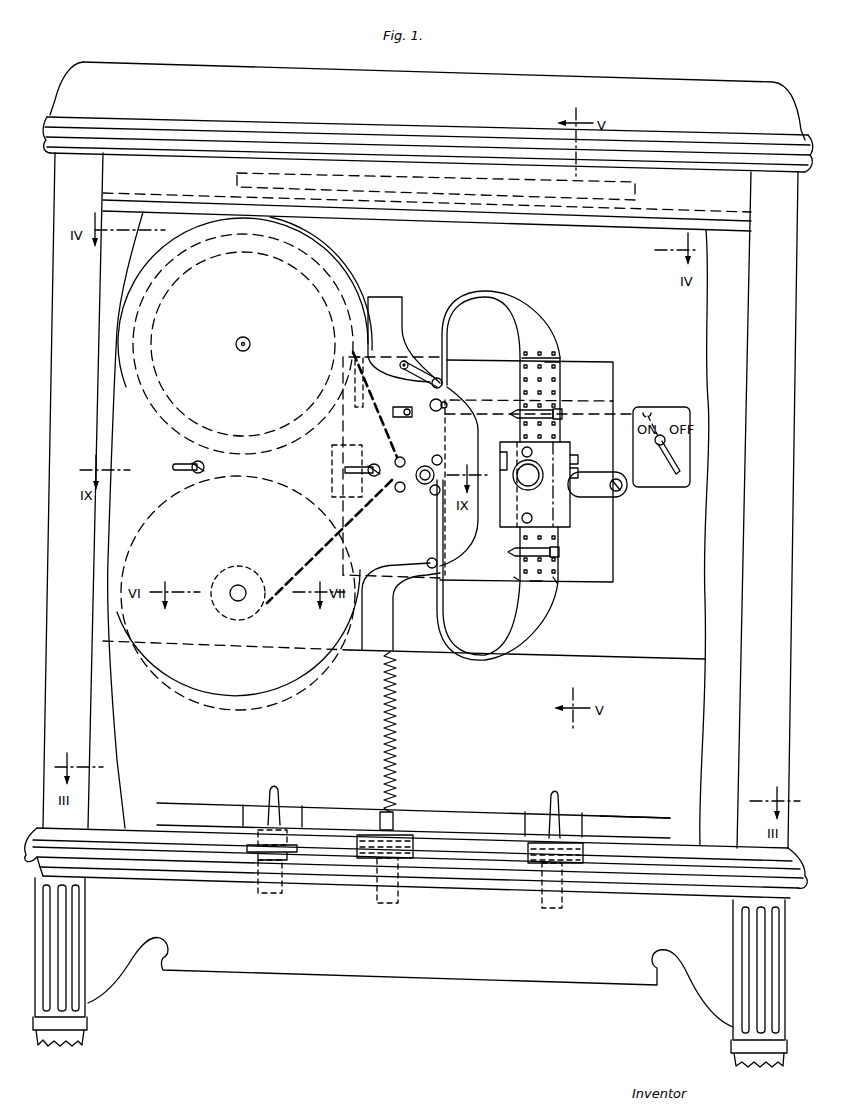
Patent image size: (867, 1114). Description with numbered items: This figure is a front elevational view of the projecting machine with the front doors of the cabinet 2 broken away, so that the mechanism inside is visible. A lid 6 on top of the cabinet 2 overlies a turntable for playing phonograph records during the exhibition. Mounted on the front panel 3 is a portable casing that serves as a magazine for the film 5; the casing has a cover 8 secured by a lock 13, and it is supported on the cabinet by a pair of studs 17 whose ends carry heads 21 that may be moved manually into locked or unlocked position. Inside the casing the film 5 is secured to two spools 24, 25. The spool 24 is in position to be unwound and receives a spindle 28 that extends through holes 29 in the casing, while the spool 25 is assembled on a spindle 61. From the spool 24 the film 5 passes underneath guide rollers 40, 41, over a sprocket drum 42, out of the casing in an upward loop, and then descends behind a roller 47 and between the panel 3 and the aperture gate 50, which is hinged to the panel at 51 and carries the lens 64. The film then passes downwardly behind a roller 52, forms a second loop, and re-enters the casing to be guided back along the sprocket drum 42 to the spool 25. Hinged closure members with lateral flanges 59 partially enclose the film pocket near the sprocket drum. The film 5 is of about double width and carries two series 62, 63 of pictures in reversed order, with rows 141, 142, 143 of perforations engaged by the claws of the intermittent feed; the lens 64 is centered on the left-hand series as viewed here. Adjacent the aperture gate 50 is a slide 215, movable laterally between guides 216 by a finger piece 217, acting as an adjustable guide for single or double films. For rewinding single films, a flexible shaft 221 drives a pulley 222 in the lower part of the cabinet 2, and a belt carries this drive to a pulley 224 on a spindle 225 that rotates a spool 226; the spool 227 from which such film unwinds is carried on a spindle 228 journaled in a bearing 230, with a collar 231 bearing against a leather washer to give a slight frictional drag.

The cabinet 2 is at (302, 968).
The front panel 3 is at (404, 616).
The film 5 is at (534, 326).
The lid 6 is at (700, 88).
The cover 8 is at (346, 300).
The lock 13 is at (332, 470).
The studs 17 is at (190, 462).
The heads 21 is at (180, 470).
The spool 24 is at (300, 280).
The spool 25 is at (195, 677).
The spindle 28 is at (248, 342).
The holes 29 is at (250, 346).
The guide roller 40 is at (401, 457).
The guide roller 41 is at (437, 455).
The sprocket drum 42 is at (423, 485).
The roller 47 is at (555, 412).
The aperture gate 50 is at (541, 493).
The hinge 51 is at (578, 459).
The roller 52 is at (551, 557).
The lateral flanges 59 is at (390, 318).
The spindle 61 is at (237, 600).
The series of pictures 62 is at (530, 357).
The series of pictures 63 is at (553, 362).
The lens 64 is at (528, 475).
The row of perforations 141 is at (515, 579).
The row of perforations 142 is at (535, 584).
The row of perforations 143 is at (555, 585).
The slide 215 is at (597, 484).
The guides 216 is at (578, 474).
The finger piece 217 is at (629, 489).
The flexible shaft 221 is at (397, 724).
The pulley 222 is at (401, 832).
The pulley 224 is at (535, 868).
The spindle 225 is at (558, 808).
The spool 226 is at (612, 818).
The spool 227 is at (318, 807).
The spindle 228 is at (273, 789).
The bearing 230 is at (262, 894).
The collar 231 is at (250, 856).